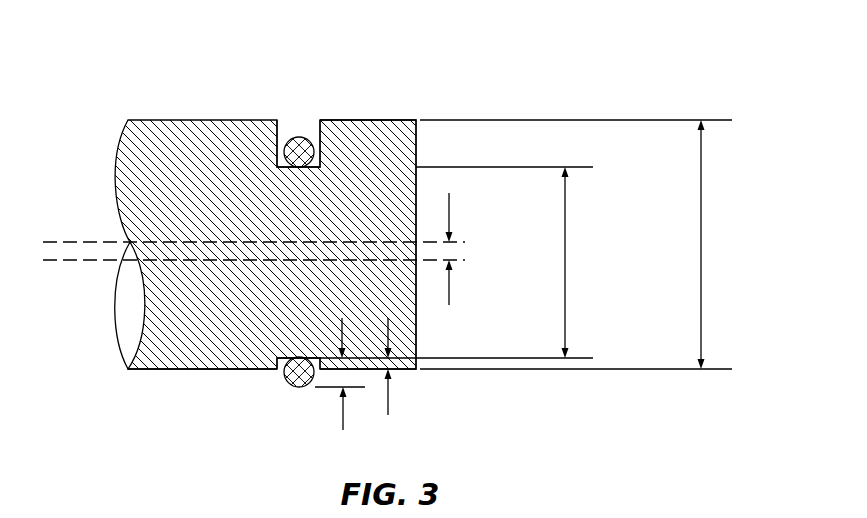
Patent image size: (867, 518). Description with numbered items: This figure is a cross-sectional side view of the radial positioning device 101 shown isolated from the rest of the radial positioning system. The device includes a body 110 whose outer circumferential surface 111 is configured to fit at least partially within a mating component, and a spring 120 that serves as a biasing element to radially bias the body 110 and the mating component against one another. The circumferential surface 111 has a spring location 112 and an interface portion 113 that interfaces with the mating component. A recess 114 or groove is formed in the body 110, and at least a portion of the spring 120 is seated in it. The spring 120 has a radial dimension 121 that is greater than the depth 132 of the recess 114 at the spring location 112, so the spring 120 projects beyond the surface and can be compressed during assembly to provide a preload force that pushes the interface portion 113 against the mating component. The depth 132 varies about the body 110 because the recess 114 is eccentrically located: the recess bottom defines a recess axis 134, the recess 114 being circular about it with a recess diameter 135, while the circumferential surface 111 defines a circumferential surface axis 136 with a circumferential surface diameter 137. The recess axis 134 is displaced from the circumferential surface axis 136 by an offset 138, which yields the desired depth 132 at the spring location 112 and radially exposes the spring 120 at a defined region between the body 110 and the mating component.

The radial positioning device 101 is at (362, 61).
The body 110 is at (225, 121).
The circumferential surface 111 is at (389, 120).
The spring location 112 is at (262, 369).
The interface portion 113 is at (330, 120).
The recess 114 is at (276, 379).
The spring 120 is at (303, 388).
The radial dimension 121 is at (343, 430).
The depth 132 is at (388, 404).
The recess axis 134 is at (69, 262).
The recess diameter 135 is at (565, 257).
The circumferential surface axis 136 is at (69, 240).
The circumferential surface diameter 137 is at (701, 237).
The offset 138 is at (449, 293).